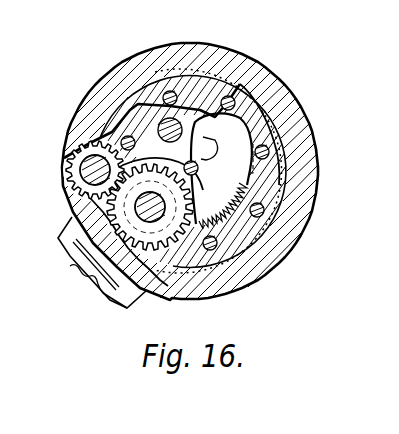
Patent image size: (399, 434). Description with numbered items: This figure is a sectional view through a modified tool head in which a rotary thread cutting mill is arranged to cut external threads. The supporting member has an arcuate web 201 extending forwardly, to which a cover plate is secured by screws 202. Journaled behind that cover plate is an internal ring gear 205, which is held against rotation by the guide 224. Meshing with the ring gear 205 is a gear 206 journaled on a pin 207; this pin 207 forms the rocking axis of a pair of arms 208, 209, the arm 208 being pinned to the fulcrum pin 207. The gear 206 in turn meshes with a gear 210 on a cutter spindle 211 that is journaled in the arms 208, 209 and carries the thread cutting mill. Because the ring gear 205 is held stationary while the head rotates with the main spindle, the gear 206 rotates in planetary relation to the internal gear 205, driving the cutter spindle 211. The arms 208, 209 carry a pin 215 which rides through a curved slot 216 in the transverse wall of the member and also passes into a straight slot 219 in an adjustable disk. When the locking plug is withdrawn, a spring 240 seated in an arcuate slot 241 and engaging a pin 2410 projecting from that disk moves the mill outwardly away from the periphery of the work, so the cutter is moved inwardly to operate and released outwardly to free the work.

The arcuate web 201 is at (278, 102).
The internal ring gear 205 is at (293, 127).
The pin 2410 is at (287, 161).
The arcuate slot 241 is at (256, 189).
The spring 240 is at (286, 229).
The guide 224 is at (57, 238).
The pin 207 is at (68, 264).
The gear 206 is at (106, 297).
The curved slot 216 is at (221, 171).
The arm 208 is at (117, 119).
The gear 210 is at (80, 165).
The cutter spindle 211 is at (72, 182).
The arm 209 is at (150, 207).
The straight slot 219 is at (163, 75).
The screws 202 is at (181, 71).
The pin 215 is at (205, 72).